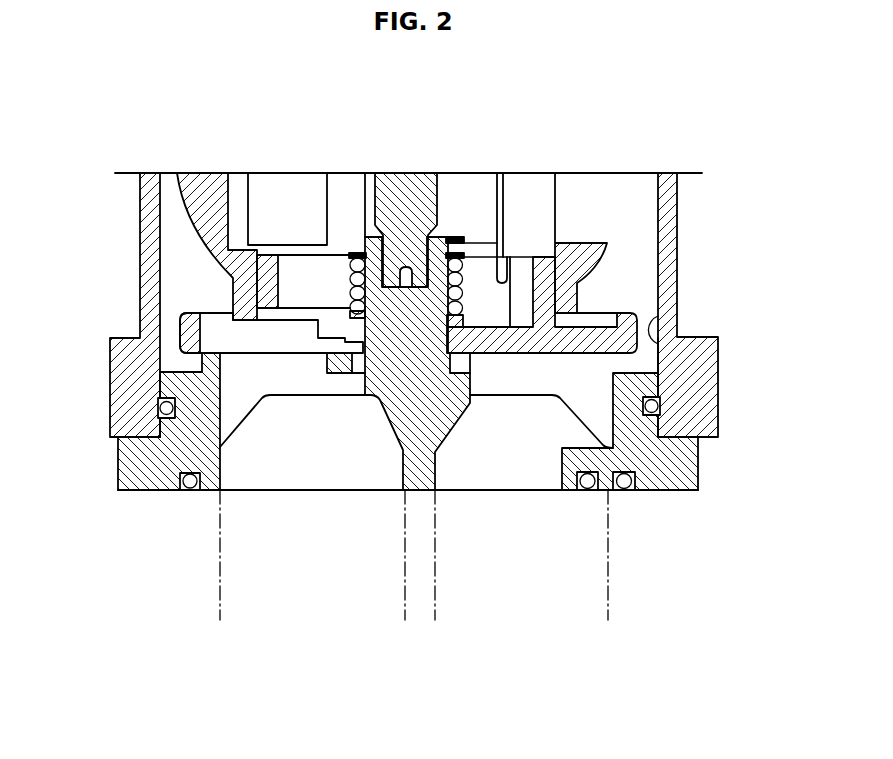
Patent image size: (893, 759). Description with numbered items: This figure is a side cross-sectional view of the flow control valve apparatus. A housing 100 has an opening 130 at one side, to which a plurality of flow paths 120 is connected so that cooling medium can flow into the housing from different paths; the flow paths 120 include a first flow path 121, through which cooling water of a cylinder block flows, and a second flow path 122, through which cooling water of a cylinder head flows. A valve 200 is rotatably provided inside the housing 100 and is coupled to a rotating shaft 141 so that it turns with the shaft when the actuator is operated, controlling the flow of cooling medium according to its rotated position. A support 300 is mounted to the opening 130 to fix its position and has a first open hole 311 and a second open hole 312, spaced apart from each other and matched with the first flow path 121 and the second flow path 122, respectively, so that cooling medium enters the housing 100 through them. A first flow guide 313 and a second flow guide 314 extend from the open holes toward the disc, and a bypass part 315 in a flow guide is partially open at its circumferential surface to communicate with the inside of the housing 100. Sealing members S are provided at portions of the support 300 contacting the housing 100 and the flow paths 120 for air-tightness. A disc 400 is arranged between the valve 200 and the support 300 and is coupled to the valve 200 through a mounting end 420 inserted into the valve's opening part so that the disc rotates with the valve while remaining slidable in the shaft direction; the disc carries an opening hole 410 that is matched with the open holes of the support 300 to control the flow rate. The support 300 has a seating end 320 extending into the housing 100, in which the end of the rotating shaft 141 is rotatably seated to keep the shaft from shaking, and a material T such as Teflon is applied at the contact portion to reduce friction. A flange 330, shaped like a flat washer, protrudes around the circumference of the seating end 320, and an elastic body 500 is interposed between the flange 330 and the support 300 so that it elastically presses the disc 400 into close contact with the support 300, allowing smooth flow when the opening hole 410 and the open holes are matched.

The housing 100 is at (670, 228).
The plurality of flow paths 120 is at (473, 678).
The first flow path 121 is at (405, 548).
The second flow path 122 is at (435, 548).
The opening 130 is at (657, 317).
The rotating shaft 141 is at (405, 192).
The valve 200 is at (207, 188).
The support 300 is at (157, 455).
The first open hole 311 is at (242, 408).
The second open hole 312 is at (473, 363).
The first flow guide 313 is at (290, 356).
The second flow guide 314 is at (548, 398).
The bypass part 315 is at (690, 375).
The seating end 320 is at (348, 295).
The flange 330 is at (465, 240).
The disc 400 is at (455, 358).
The opening hole 410 is at (178, 326).
The mounting end 420 is at (267, 252).
The elastic body 500 is at (578, 284).
The sealing members S is at (157, 412).
The material for reducing friction T is at (432, 228).